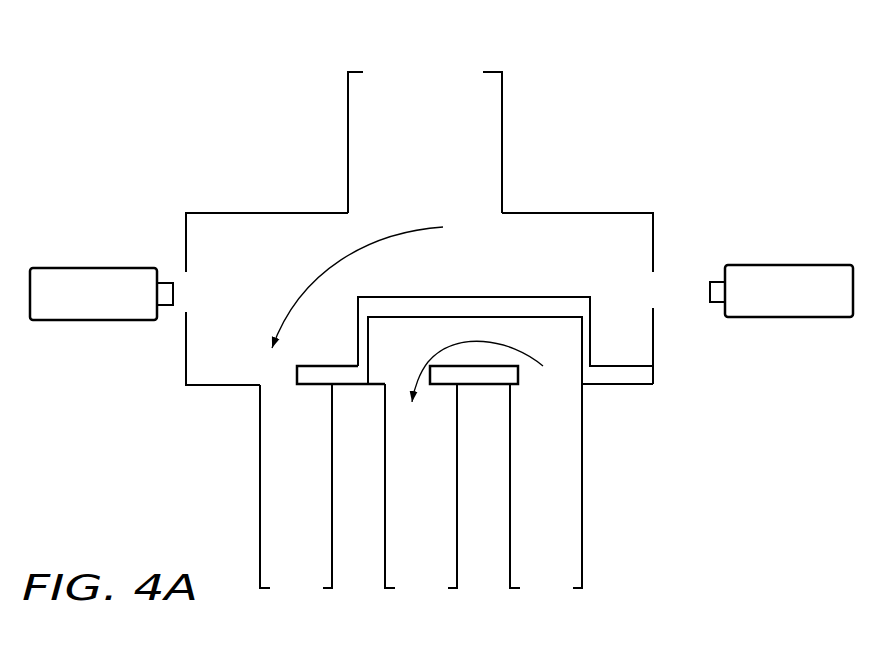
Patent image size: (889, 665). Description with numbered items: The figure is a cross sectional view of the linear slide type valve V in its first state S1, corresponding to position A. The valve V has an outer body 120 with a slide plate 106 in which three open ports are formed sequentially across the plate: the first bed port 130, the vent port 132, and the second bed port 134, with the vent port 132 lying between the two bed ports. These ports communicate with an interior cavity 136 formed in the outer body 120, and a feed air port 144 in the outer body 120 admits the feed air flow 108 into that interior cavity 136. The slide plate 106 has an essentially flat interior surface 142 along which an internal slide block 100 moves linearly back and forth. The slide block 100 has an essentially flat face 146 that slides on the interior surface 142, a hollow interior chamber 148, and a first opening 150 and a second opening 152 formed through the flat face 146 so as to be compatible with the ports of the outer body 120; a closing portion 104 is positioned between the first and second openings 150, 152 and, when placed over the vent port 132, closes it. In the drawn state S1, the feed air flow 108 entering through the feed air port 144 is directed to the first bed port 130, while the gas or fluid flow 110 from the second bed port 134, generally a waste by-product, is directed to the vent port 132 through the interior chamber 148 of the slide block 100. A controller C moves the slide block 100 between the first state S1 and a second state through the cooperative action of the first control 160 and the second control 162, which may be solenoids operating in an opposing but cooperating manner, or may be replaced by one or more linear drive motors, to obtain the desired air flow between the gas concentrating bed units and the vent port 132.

The slide block 100 is at (565, 242).
The closing portion 104 is at (447, 392).
The slide plate 106 is at (228, 393).
The feed air flow 108 is at (442, 87).
The air or fluid path 110 is at (443, 350).
The outer body 120 is at (653, 230).
The port 1 130 is at (298, 580).
The vent port 132 is at (420, 580).
The port 2 134 is at (548, 578).
The interior cavity 136 is at (505, 273).
The interior surface 142 is at (208, 373).
The feed air port 144 is at (393, 82).
The flat face 146 is at (310, 392).
The interior chamber 148 is at (575, 351).
The first opening 150 is at (390, 387).
The second opening 152 is at (557, 386).
The control 1 160 is at (67, 322).
The control 2 162 is at (798, 317).
The valve V is at (207, 197).
The controller C is at (73, 255).
The first state S1 is at (735, 480).